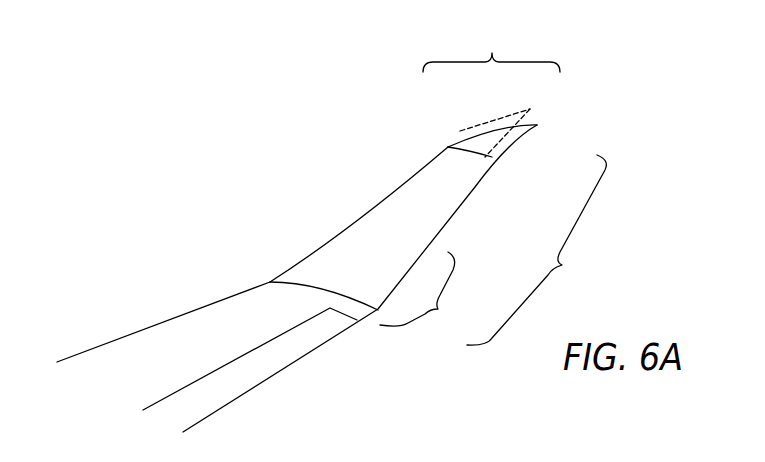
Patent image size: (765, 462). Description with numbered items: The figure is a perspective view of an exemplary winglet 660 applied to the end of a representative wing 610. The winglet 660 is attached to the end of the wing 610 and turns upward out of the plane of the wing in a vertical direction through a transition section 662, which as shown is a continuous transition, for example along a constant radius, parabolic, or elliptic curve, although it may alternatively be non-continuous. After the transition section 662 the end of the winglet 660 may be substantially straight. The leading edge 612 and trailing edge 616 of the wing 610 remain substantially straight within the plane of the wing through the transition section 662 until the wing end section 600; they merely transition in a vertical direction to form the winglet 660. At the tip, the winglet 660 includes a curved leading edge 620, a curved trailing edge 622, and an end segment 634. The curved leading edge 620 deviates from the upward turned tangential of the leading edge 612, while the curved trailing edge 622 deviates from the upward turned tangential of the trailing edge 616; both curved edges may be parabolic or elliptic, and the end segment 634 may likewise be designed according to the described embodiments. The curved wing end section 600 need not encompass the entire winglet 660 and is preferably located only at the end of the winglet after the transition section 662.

The wing end section 600 is at (491, 47).
The wing 610 is at (211, 199).
The leading edge 612 is at (410, 182).
The trailing edge 616 is at (443, 228).
The curved leading edge 620 is at (478, 138).
The curved trailing edge 622 is at (505, 143).
The end segment 634 is at (537, 125).
The winglet 660 is at (536, 250).
The transition section 662 is at (425, 292).